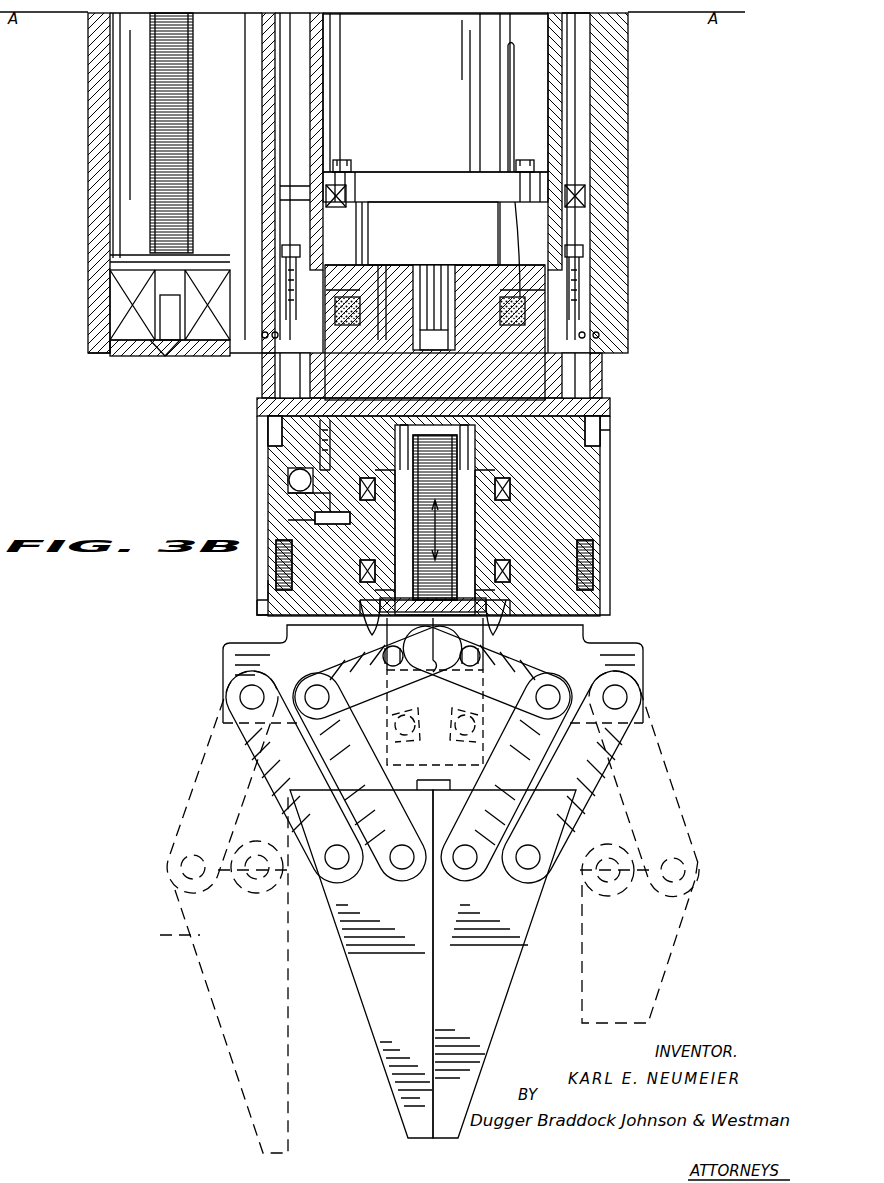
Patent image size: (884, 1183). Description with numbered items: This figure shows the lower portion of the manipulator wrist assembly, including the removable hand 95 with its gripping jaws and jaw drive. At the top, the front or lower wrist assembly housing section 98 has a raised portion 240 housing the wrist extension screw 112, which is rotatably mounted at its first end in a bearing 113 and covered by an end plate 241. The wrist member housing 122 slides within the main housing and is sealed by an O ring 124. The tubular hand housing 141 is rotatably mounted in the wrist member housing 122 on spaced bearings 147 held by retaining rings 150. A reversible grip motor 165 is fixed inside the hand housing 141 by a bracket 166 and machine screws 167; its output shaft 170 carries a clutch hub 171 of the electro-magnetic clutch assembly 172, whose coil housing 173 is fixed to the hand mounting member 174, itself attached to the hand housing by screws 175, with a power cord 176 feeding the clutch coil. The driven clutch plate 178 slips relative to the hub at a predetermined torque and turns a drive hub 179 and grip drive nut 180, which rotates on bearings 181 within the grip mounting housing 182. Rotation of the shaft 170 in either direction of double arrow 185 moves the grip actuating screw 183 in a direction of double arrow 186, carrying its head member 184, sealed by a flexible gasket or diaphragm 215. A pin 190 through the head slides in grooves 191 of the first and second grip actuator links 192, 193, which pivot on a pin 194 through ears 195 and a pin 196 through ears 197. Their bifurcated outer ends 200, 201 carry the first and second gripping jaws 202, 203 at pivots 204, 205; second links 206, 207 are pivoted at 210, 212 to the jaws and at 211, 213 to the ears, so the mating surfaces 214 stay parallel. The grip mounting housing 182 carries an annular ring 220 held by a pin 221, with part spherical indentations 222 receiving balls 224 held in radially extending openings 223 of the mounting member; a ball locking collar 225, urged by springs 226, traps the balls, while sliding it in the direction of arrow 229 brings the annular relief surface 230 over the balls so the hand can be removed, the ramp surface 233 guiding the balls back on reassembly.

The hand 95 is at (200, 716).
The front or lower wrist assembly housing section 98 is at (628, 104).
The wrist extension screw 112 is at (160, 88).
The bearing 113 is at (120, 300).
The wrist member housing 122 is at (262, 72).
The O ring 124 is at (262, 330).
The hand housing 141 is at (380, 96).
The bearings 147 is at (600, 196).
The retaining rings 150 is at (268, 186).
The grip motor 165 is at (450, 44).
The bracket 166 is at (470, 182).
The machine screws 167 is at (362, 172).
The output shaft 170 is at (455, 262).
The clutch hub 171 is at (392, 290).
The electro-magnetic clutch assembly 172 is at (330, 368).
The coil housing 173 is at (350, 300).
The hand mounting member 174 is at (290, 398).
The screws 175 is at (285, 245).
The power cord 176 is at (510, 104).
The clutch plate 178 is at (270, 440).
The drive hub 179 is at (405, 460).
The grip drive nut 180 is at (490, 535).
The bearings 181 is at (275, 578).
The grip mounting housing 182 is at (225, 680).
The grip actuating screw 183 is at (470, 545).
The head member 184 is at (435, 691).
The double arrow 185 is at (420, 330).
The double arrow 186 is at (420, 525).
The pin 190 is at (410, 650).
The grooves 191 is at (300, 660).
The first grip actuator link 192 is at (345, 870).
The second grip actuator link 193 is at (525, 870).
The pin 194 is at (342, 725).
The ears 195 is at (232, 648).
The pin 196 is at (620, 648).
The ears 197 is at (640, 643).
The outer end 200 is at (360, 902).
The outer end 201 is at (445, 905).
The first gripping jaw 202 is at (175, 905).
The second gripping jaw 203 is at (660, 950).
The pivot 204 is at (402, 850).
The pivot 205 is at (470, 850).
The second link 206 is at (198, 808).
The second link 207 is at (690, 810).
The pivot 210 is at (310, 890).
The pivot 211 is at (240, 697).
The pivot 212 is at (575, 890).
The pivot 213 is at (615, 697).
The mating surfaces 214 is at (432, 1000).
The flexible gasket or diaphragm 215 is at (320, 630).
The annular ring 220 is at (290, 520).
The pin 221 is at (310, 516).
The part spherical indentations 222 is at (295, 498).
The radially extending openings 223 is at (288, 488).
The ball 224 is at (283, 472).
The ball locking collar 225 is at (270, 610).
The springs 226 is at (592, 568).
The arrow 229 is at (615, 512).
The annular relief surface 230 is at (604, 420).
The ramp surface 233 is at (315, 445).
The raised portion 240 is at (110, 338).
The end plate 241 is at (140, 356).